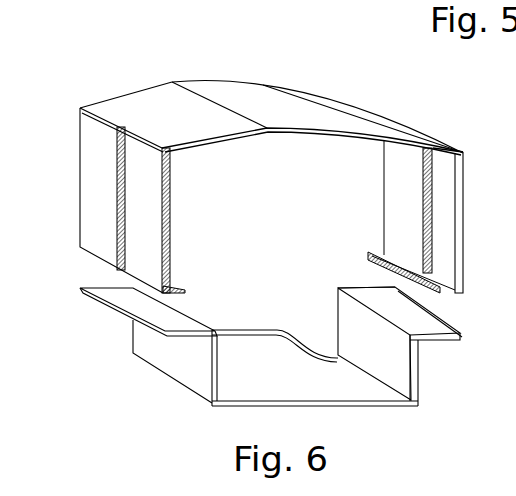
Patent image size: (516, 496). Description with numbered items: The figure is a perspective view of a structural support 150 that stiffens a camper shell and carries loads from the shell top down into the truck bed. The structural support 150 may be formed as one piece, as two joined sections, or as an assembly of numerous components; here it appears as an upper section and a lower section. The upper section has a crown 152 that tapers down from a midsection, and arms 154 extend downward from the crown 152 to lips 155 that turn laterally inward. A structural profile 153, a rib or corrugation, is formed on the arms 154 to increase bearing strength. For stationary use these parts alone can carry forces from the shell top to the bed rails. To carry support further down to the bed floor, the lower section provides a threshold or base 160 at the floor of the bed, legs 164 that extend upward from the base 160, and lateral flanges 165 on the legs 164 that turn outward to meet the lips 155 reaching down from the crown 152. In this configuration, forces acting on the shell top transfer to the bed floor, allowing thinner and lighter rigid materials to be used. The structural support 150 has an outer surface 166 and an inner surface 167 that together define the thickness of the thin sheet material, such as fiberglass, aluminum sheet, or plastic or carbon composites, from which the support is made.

The structural support 150 is at (142, 62).
The crown 152 is at (243, 96).
The structural profile 153 is at (118, 145).
The arms 154 is at (408, 193).
The lips 155 is at (409, 270).
The base 160 is at (290, 383).
The legs 164 is at (157, 362).
The lateral flanges 165 is at (110, 308).
The outer surface 166 is at (110, 247).
The inner surface 167 is at (408, 227).